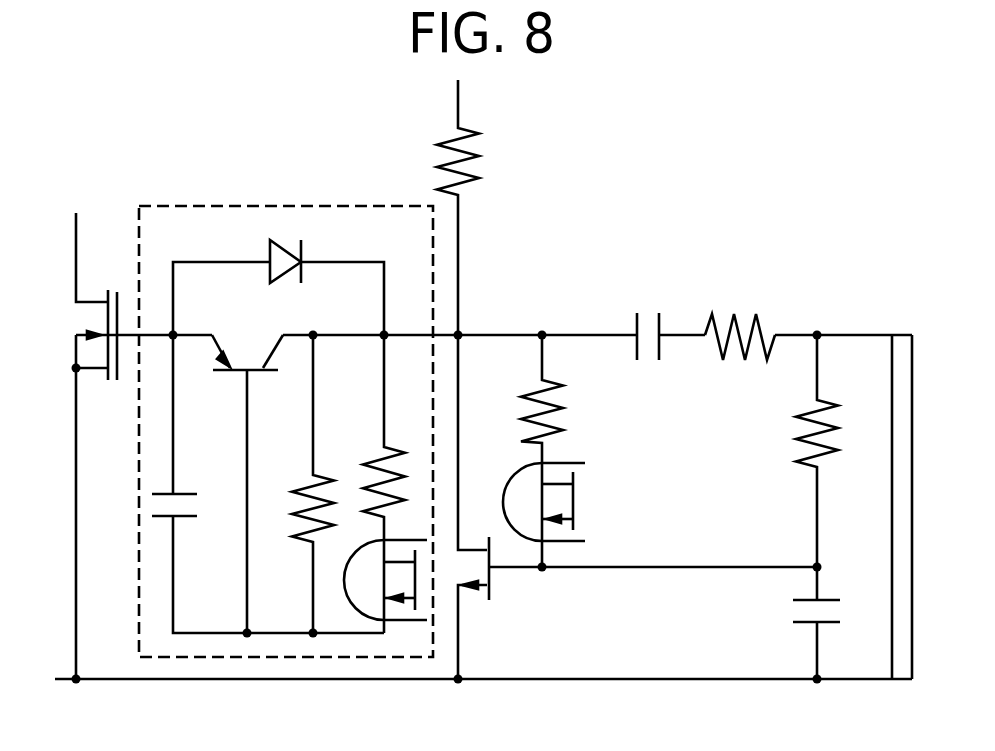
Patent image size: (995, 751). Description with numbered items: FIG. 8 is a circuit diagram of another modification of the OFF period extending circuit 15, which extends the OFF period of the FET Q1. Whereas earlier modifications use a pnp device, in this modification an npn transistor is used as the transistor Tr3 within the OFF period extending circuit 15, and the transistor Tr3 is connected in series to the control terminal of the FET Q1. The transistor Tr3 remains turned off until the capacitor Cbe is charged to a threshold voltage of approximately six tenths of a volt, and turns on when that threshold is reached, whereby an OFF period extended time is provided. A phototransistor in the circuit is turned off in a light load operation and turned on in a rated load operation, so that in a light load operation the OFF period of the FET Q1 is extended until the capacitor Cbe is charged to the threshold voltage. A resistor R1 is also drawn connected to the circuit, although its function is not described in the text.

The OFF period extending circuit 15 is at (286, 432).
The FET Q1 is at (77, 335).
The transistor Tr3 is at (237, 484).
The capacitor Cbe is at (268, 484).
The resistor R1 is at (477, 207).